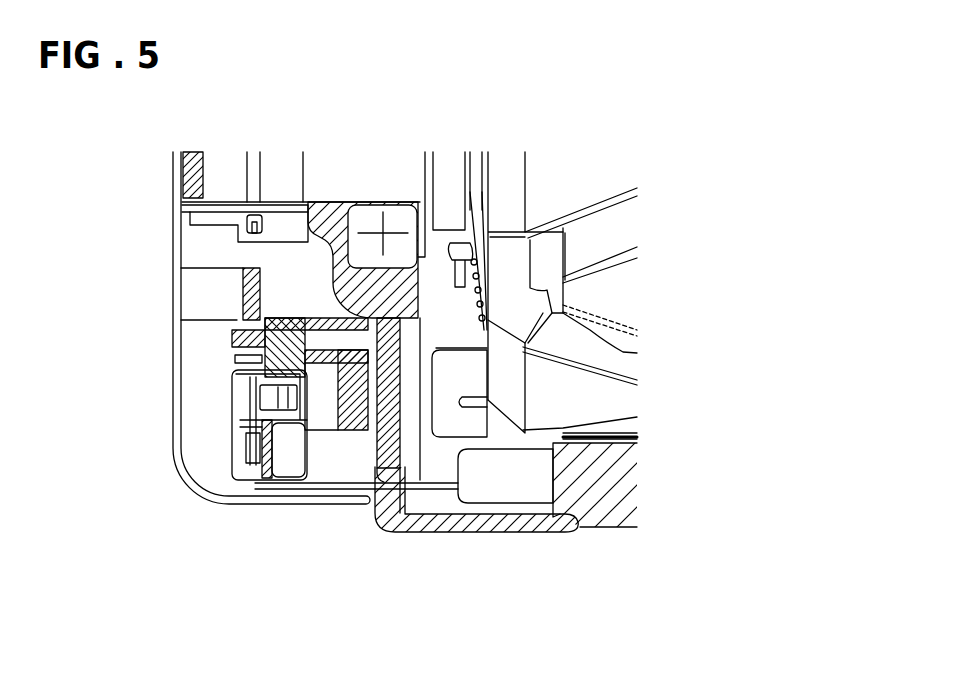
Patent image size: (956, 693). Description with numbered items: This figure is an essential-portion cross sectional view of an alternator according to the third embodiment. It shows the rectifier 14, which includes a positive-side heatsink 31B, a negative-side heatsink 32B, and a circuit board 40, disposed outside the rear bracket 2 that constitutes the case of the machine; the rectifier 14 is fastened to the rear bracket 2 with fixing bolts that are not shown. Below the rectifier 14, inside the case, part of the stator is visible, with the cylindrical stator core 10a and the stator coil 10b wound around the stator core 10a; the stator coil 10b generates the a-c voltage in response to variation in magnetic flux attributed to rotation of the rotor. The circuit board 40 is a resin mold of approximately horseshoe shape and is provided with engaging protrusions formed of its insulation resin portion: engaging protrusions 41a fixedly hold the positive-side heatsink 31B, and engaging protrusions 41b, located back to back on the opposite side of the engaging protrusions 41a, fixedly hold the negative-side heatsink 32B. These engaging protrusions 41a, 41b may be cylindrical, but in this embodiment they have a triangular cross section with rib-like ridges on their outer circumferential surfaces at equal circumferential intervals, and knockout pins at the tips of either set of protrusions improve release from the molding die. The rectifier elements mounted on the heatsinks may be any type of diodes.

The engaging protrusion 41a is at (360, 346).
The negative-side heatsink 32B is at (213, 302).
The engaging protrusion 41b is at (233, 330).
The rectifier 14 is at (203, 380).
The circuit board 40 is at (285, 457).
The positive-side heatsink 31B is at (343, 398).
The stator coil 10b is at (473, 507).
The rear bracket 2 is at (533, 530).
The stator core 10a is at (620, 527).